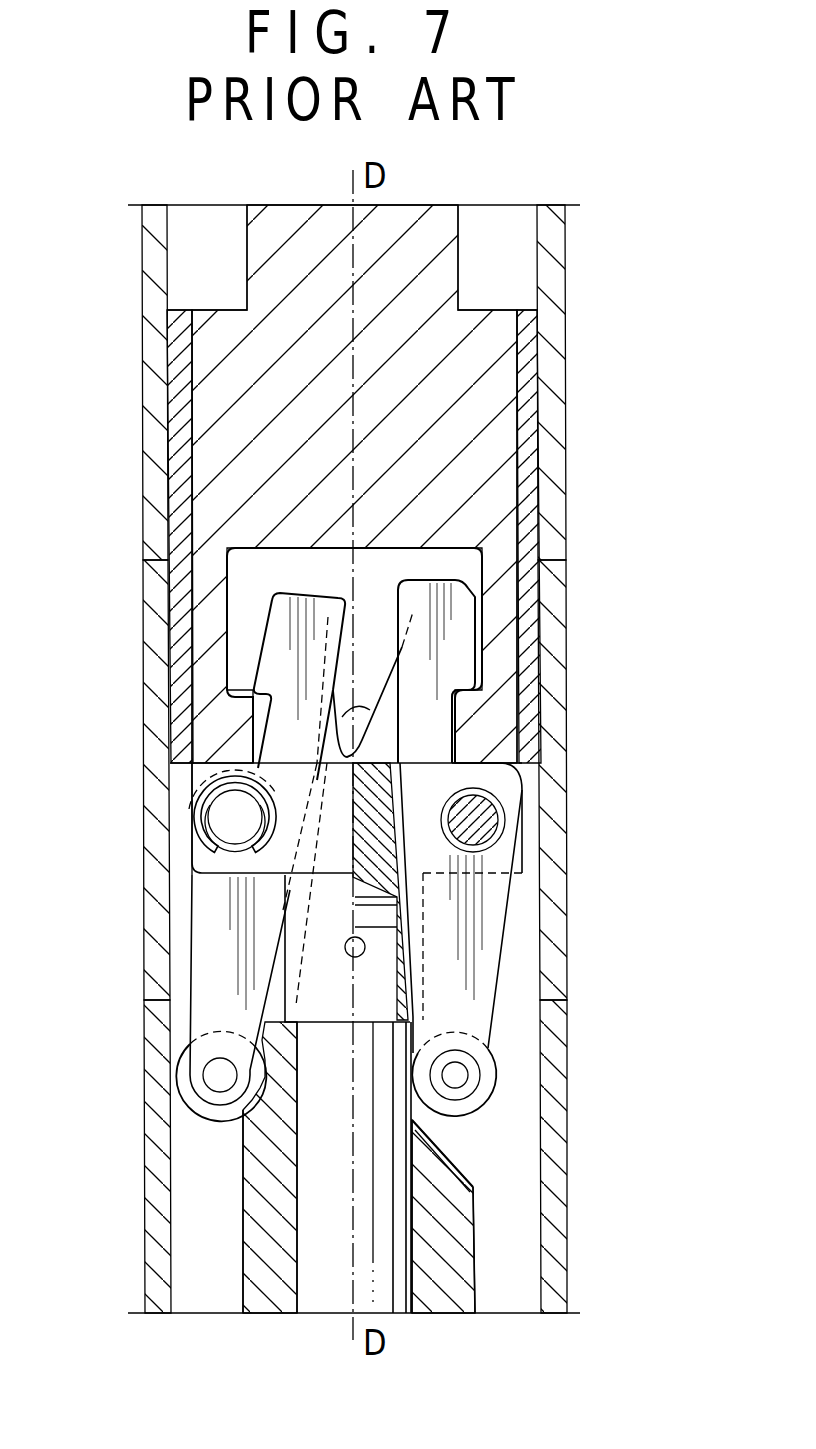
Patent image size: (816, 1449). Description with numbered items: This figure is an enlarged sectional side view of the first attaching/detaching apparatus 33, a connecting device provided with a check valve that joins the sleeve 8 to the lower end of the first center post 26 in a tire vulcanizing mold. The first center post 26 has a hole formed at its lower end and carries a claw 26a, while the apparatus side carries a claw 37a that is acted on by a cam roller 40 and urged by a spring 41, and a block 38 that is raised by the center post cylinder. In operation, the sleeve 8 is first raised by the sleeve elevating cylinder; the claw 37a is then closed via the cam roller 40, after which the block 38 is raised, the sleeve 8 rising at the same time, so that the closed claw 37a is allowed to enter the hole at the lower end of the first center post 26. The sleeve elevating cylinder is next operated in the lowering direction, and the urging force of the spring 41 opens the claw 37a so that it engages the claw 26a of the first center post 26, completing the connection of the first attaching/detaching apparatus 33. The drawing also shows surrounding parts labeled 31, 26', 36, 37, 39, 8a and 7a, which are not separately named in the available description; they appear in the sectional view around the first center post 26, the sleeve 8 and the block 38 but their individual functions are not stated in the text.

The first attaching/detaching apparatus 33 is at (592, 370).
The outer tube 31 is at (142, 367).
The first center post 26 is at (292, 484).
The inner tube of body 26' is at (294, 592).
The claw of the first center post 26a is at (237, 712).
The claw 37a is at (268, 668).
The spring 41 is at (330, 652).
The roller / retaining plate 36 is at (232, 815).
The pivot arm 37 is at (215, 910).
The block 38 is at (290, 950).
The pivot pin 39 is at (222, 1073).
The cam roller 40 is at (200, 1103).
The sleeve 8 is at (262, 1292).
The inclined surface of rod 8a is at (455, 1165).
The shaft 7a is at (313, 1292).